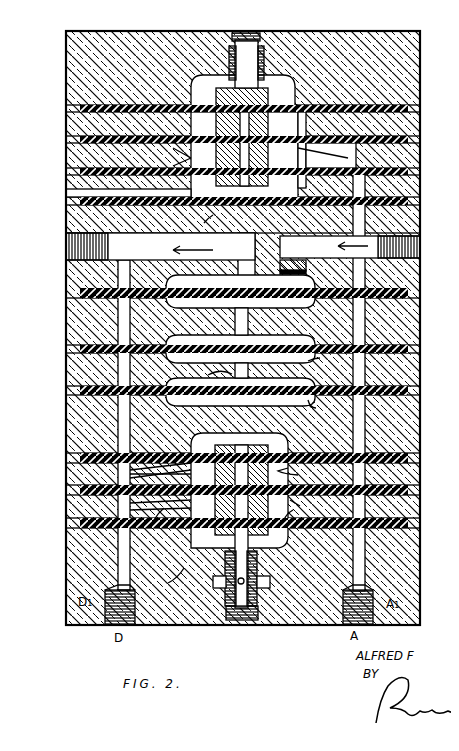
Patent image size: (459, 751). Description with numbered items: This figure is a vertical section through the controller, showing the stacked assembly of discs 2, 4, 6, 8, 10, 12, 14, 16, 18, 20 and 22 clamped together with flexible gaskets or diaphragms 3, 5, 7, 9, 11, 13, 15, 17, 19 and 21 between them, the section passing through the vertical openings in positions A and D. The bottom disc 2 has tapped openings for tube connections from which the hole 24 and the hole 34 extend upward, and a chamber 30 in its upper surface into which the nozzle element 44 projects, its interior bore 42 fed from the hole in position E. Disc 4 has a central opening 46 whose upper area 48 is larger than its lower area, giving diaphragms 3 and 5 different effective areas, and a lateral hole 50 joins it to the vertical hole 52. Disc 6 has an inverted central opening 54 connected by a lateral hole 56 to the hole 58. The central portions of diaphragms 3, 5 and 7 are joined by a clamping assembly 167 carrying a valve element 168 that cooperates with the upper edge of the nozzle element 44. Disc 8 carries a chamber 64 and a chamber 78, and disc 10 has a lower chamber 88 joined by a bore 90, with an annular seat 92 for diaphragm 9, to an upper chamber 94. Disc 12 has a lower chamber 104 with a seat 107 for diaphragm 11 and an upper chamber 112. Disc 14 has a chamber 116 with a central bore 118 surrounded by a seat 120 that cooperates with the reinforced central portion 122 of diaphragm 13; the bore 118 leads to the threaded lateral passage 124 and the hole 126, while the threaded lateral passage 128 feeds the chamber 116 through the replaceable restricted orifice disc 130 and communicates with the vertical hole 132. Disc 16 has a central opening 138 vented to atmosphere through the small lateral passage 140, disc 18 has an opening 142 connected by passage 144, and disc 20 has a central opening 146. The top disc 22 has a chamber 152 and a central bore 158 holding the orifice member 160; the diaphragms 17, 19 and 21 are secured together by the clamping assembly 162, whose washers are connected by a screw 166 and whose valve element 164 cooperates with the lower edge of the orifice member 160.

The disc 2 is at (414, 567).
The gasket 3 is at (96, 520).
The disc 4 is at (414, 514).
The gasket 5 is at (60, 477).
The disc 6 is at (414, 480).
The gasket 7 is at (98, 446).
The disc 8 is at (414, 430).
The gasket 9 is at (98, 380).
The disc 10 is at (414, 377).
The gasket 11 is at (100, 337).
The disc 12 is at (414, 320).
The gasket 13 is at (100, 280).
The disc 14 is at (414, 217).
The gasket 15 is at (120, 196).
The disc 16 is at (414, 190).
The gasket 17 is at (114, 160).
The disc 18 is at (414, 160).
The gasket 19 is at (114, 128).
The disc 20 is at (414, 124).
The gasket 21 is at (116, 97).
The disc 22 is at (414, 64).
The hole 24 is at (352, 553).
The chamber 30 is at (282, 536).
The hole 34 is at (118, 546).
The interior bore 42 is at (207, 533).
The nozzle element 44 is at (252, 600).
The central opening 46 is at (296, 513).
The upper area 48 is at (311, 501).
The lateral hole 50 is at (155, 525).
The vertical hole 52 is at (116, 498).
The central opening 54 is at (299, 471).
The lateral hole 56 is at (160, 448).
The hole 58 is at (116, 468).
The chamber 64 is at (280, 442).
The chamber 78 is at (320, 407).
The chamber 88 is at (304, 370).
The bore 90 is at (244, 358).
The annular seat 92 is at (216, 370).
The chamber 94 is at (322, 361).
The chamber 104 is at (306, 328).
The seat 107 is at (246, 318).
The chamber 112 is at (180, 300).
The chamber 116 is at (208, 258).
The central bore 118 is at (238, 232).
The seat 120 is at (286, 260).
The reinforced central portion 122 is at (280, 266).
The lateral passage 124 is at (60, 237).
The hole 126 is at (122, 272).
The lateral passage 128 is at (414, 237).
The restricted orifice disc 130 is at (288, 256).
The vertical hole 132 is at (358, 268).
The central opening 138 is at (199, 218).
The lateral passage 140 is at (60, 186).
The opening 142 is at (296, 182).
The passage 144 is at (355, 148).
The central opening 146 is at (298, 118).
The chamber 152 is at (286, 82).
The central bore 158 is at (248, 26).
The orifice member 160 is at (226, 30).
The clamping assembly 162 is at (196, 78).
The valve element 164 is at (255, 70).
The screw 166 is at (190, 148).
The clamping assembly 167 is at (168, 580).
The valve element 168 is at (268, 560).